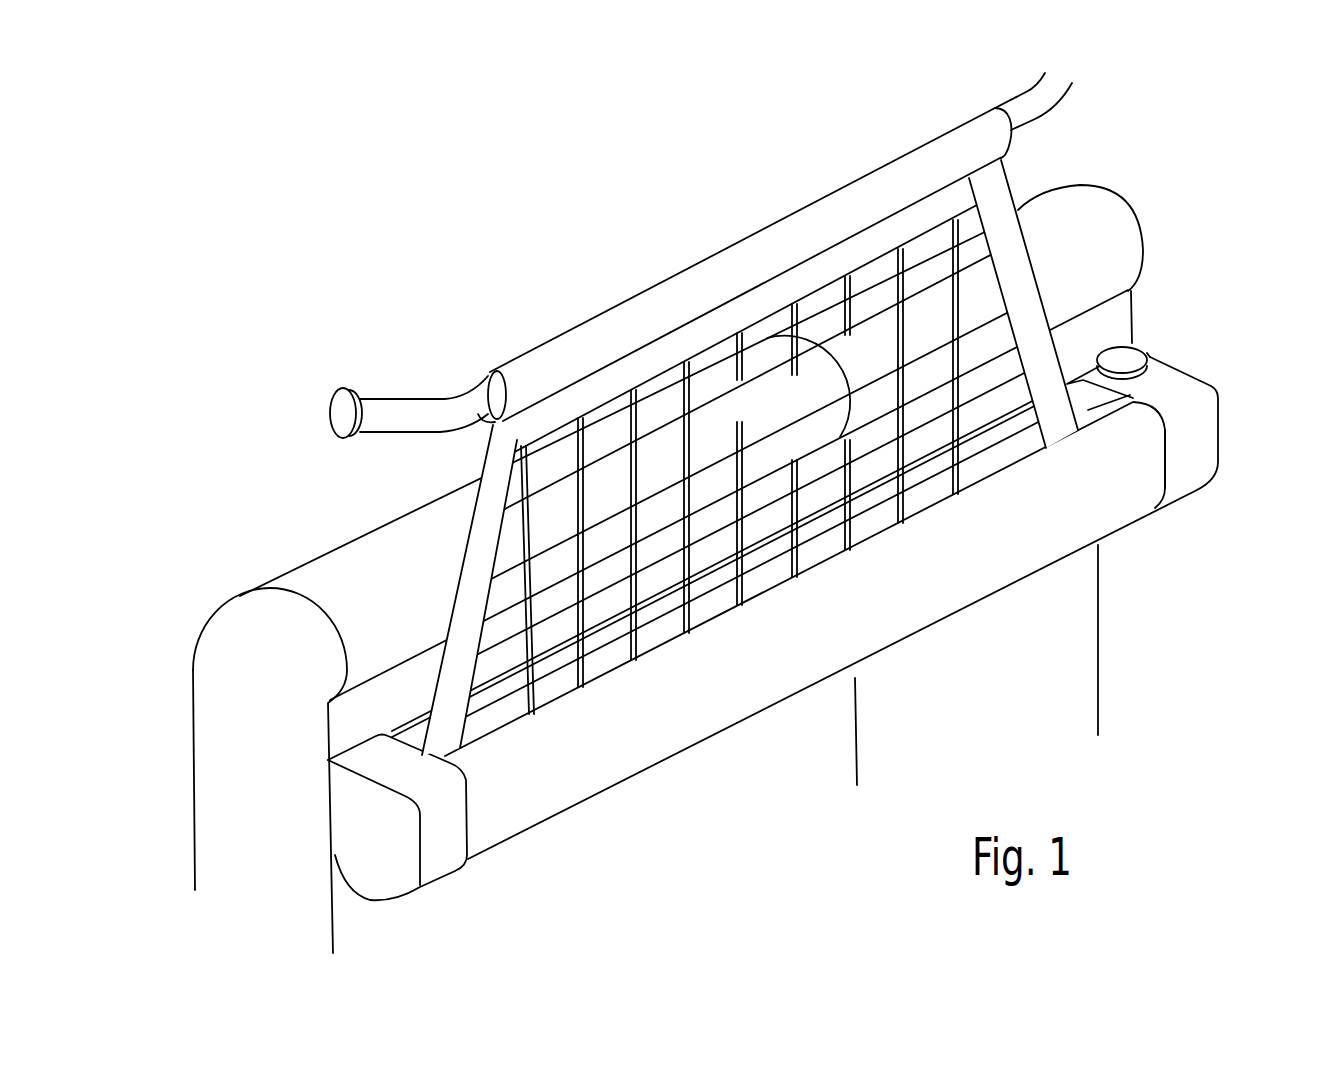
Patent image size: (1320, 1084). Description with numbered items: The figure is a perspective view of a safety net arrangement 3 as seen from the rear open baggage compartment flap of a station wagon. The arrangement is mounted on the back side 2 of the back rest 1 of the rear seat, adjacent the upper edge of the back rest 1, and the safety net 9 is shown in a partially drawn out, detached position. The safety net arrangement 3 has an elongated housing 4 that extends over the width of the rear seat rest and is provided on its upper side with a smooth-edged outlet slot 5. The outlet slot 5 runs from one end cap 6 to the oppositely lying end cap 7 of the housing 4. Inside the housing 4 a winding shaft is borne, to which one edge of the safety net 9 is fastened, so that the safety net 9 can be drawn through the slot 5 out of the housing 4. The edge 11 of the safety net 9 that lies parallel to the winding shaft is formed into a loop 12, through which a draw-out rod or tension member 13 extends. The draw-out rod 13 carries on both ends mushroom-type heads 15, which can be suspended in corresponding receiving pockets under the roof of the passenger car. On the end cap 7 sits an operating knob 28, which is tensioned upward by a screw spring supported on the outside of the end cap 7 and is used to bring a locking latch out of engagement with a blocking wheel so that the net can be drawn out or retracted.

The back rest 1 is at (270, 580).
The back side 2 is at (1034, 645).
The safety net arrangement 3 is at (566, 222).
The housing 4 is at (638, 776).
The outlet slot 5 is at (1220, 393).
The end cap 6 is at (387, 870).
The end cap 7 is at (1197, 473).
The safety net 9 is at (1002, 220).
The edge 11 is at (747, 238).
The loop 12 is at (517, 407).
The draw-out rod 13 is at (401, 406).
The mushroom-type head 15 is at (343, 402).
The operating knob 28 is at (1125, 358).